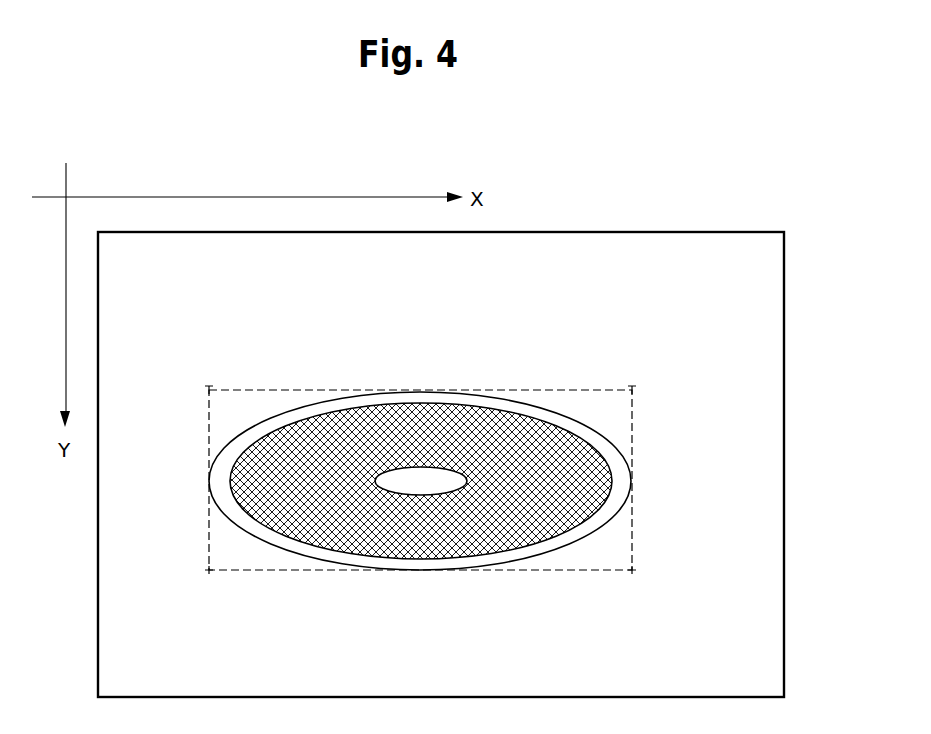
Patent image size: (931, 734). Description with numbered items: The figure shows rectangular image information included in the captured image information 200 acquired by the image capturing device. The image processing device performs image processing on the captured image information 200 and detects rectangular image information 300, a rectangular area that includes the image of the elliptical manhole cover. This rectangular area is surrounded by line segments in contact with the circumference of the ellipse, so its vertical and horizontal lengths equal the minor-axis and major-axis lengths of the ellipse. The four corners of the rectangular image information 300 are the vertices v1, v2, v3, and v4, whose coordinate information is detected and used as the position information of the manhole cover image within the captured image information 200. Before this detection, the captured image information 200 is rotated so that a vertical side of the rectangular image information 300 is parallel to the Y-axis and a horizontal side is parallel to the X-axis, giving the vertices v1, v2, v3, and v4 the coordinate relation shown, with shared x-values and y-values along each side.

The captured image information 200 is at (712, 231).
The rectangular image information 300 is at (317, 390).
The vertex v1 is at (209, 390).
The vertex v2 is at (632, 390).
The vertex v3 is at (632, 570).
The vertex v4 is at (209, 570).